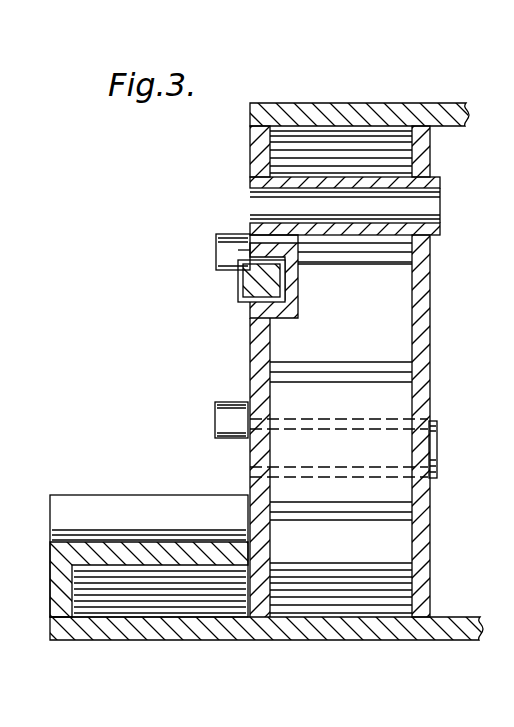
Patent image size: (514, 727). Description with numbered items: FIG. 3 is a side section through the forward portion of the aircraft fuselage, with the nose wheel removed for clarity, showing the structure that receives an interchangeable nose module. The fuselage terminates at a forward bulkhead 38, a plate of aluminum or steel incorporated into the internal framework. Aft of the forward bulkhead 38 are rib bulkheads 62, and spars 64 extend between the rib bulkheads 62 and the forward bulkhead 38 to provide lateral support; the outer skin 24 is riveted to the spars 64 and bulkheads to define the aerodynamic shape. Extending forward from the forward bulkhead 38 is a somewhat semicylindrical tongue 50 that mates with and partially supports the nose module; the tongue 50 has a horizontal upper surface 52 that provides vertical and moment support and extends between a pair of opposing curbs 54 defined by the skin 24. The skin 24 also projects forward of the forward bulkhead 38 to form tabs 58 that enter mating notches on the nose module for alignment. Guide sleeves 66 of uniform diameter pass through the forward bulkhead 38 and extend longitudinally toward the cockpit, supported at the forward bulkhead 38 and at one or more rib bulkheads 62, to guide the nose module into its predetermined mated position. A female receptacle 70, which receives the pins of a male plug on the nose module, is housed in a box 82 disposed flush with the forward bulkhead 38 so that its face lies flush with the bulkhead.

The outer skin 24 is at (312, 103).
The forward bulkhead 38 is at (250, 141).
The tongue 50 is at (68, 551).
The upper surface 52 is at (190, 520).
The curbs 54 is at (257, 363).
The tabs 58 is at (216, 245).
The rib bulkheads 62 is at (422, 308).
The spars 64 is at (348, 253).
The sleeves 66 is at (440, 181).
The female receptacle 70 is at (238, 285).
The box 82 is at (240, 255).